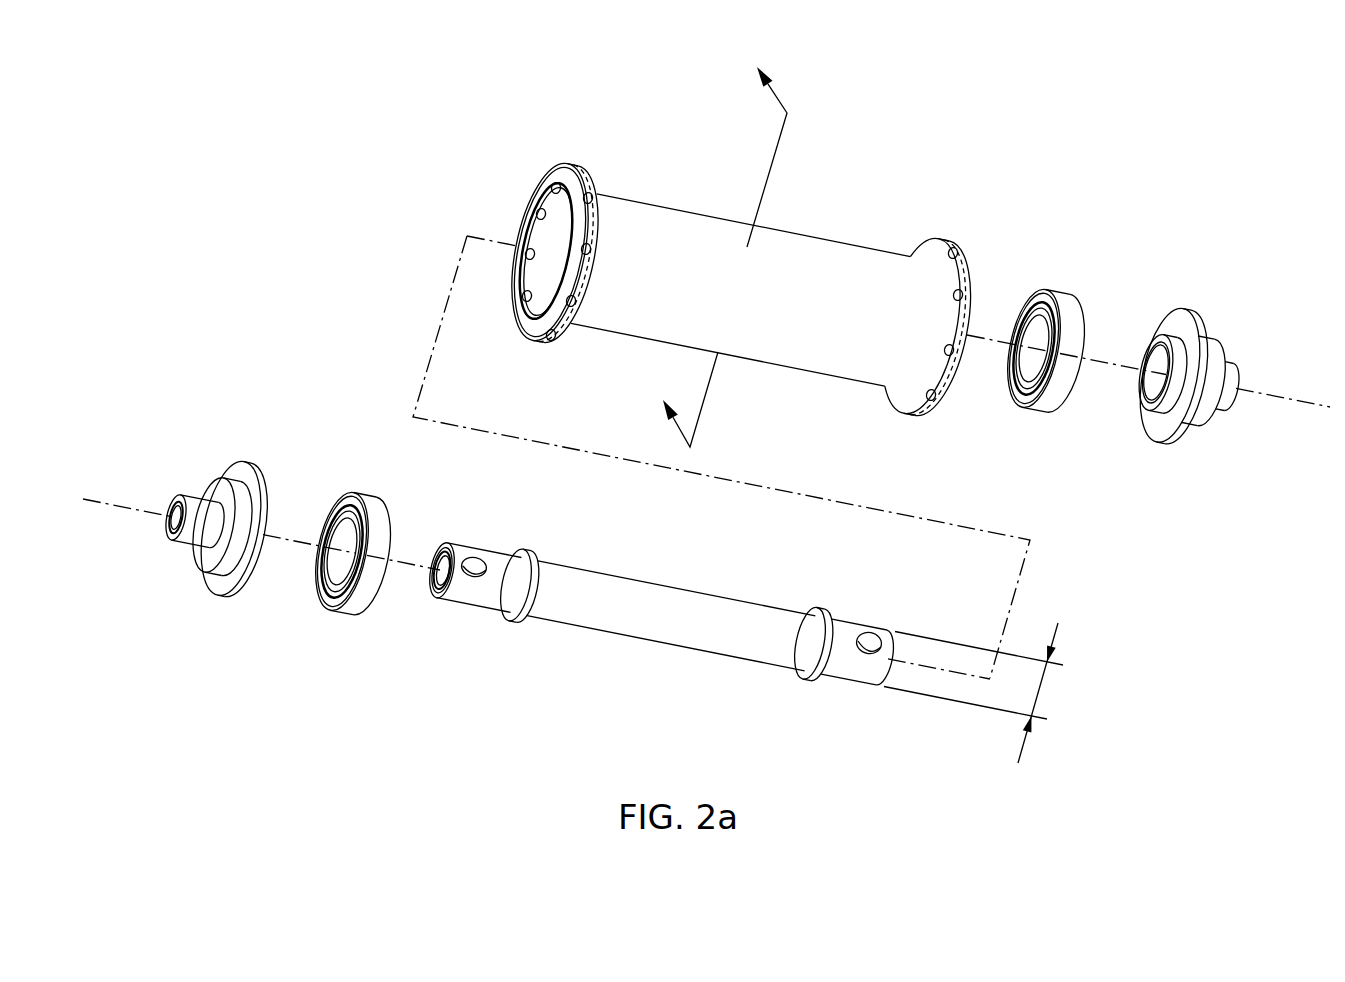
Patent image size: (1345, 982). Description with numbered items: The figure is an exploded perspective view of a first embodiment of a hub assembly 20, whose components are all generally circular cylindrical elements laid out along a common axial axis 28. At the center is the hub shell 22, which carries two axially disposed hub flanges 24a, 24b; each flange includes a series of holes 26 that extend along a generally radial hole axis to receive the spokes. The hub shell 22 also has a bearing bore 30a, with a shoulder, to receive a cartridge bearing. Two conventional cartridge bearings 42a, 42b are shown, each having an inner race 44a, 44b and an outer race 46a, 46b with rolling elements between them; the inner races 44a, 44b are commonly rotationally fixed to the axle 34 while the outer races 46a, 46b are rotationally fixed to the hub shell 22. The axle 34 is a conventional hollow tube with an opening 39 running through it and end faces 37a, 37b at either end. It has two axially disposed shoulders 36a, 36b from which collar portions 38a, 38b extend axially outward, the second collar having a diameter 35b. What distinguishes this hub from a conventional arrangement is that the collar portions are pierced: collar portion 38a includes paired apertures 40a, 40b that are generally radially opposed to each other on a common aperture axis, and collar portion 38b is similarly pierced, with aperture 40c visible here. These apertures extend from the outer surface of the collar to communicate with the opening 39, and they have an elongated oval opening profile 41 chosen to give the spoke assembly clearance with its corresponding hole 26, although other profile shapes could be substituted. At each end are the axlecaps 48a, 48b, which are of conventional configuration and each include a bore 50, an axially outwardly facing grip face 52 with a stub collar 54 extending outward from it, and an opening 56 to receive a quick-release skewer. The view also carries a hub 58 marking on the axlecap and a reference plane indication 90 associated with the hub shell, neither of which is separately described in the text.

The hub assembly 20 is at (1240, 175).
The hub shell 22 is at (818, 258).
The hub flange 24a is at (585, 183).
The hub flange 24b is at (955, 244).
The holes 26 is at (541, 210).
The axial axis 28 is at (1280, 400).
The bearing bore 30a is at (560, 230).
The axle 34 is at (667, 603).
The diameter 35b is at (1042, 694).
The shoulder 36a is at (509, 550).
The shoulder 36b is at (833, 630).
The end face 37a is at (442, 598).
The end face 37b is at (890, 678).
The collar portion 38a is at (490, 618).
The collar portion 38b is at (830, 670).
The opening 39 is at (432, 549).
The aperture 40a is at (486, 557).
The aperture 40b is at (430, 576).
The aperture 40c is at (883, 630).
The oval opening profile 41 is at (493, 572).
The bearing 42a is at (368, 616).
The bearing 42b is at (1063, 300).
The inner race 44a is at (343, 540).
The inner race 44b is at (1032, 337).
The outer race 46a is at (348, 610).
The outer race 46b is at (1048, 407).
The axlecap 48a is at (234, 464).
The axlecap 48b is at (1188, 312).
The bore 50 is at (1150, 387).
The grip face 52 is at (1212, 422).
The stub collar 54 is at (1232, 362).
The opening 56 is at (158, 526).
The end cap hub 58 is at (1147, 335).
The section plane 90 is at (721, 359).